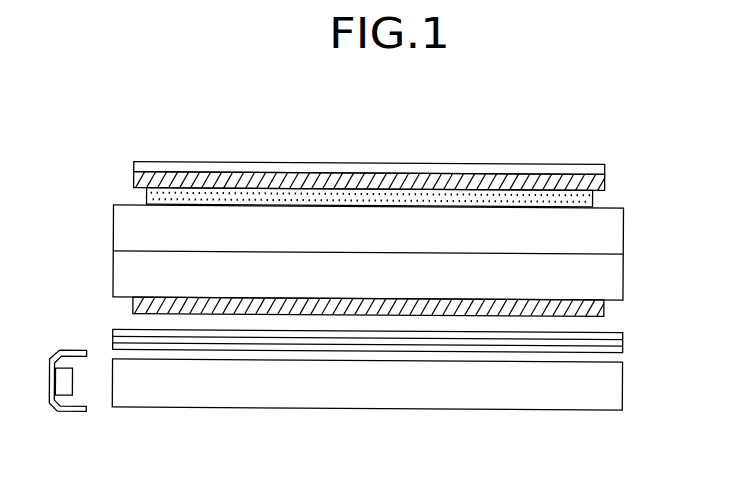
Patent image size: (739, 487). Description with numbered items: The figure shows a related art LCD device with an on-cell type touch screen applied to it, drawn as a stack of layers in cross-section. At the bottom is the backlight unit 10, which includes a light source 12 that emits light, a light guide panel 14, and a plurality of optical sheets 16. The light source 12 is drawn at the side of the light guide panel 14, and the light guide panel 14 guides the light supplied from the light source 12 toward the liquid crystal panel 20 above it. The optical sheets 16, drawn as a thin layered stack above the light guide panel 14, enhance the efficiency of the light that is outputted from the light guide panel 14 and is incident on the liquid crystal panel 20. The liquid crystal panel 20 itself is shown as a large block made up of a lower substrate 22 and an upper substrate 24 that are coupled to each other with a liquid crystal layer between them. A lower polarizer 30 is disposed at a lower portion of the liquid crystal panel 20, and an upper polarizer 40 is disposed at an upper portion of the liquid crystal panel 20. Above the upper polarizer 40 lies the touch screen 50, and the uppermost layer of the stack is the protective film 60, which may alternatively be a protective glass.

The backlight unit 10 is at (391, 396).
The light source 12 is at (66, 392).
The light guide panel 14 is at (375, 404).
The optical sheets 16 is at (433, 349).
The liquid crystal panel 20 is at (413, 253).
The lower substrate 22 is at (648, 280).
The upper substrate 24 is at (620, 233).
The lower polarizer 30 is at (604, 307).
The upper polarizer 40 is at (604, 184).
The touch screen 50 is at (592, 202).
The protective film 60 is at (604, 165).